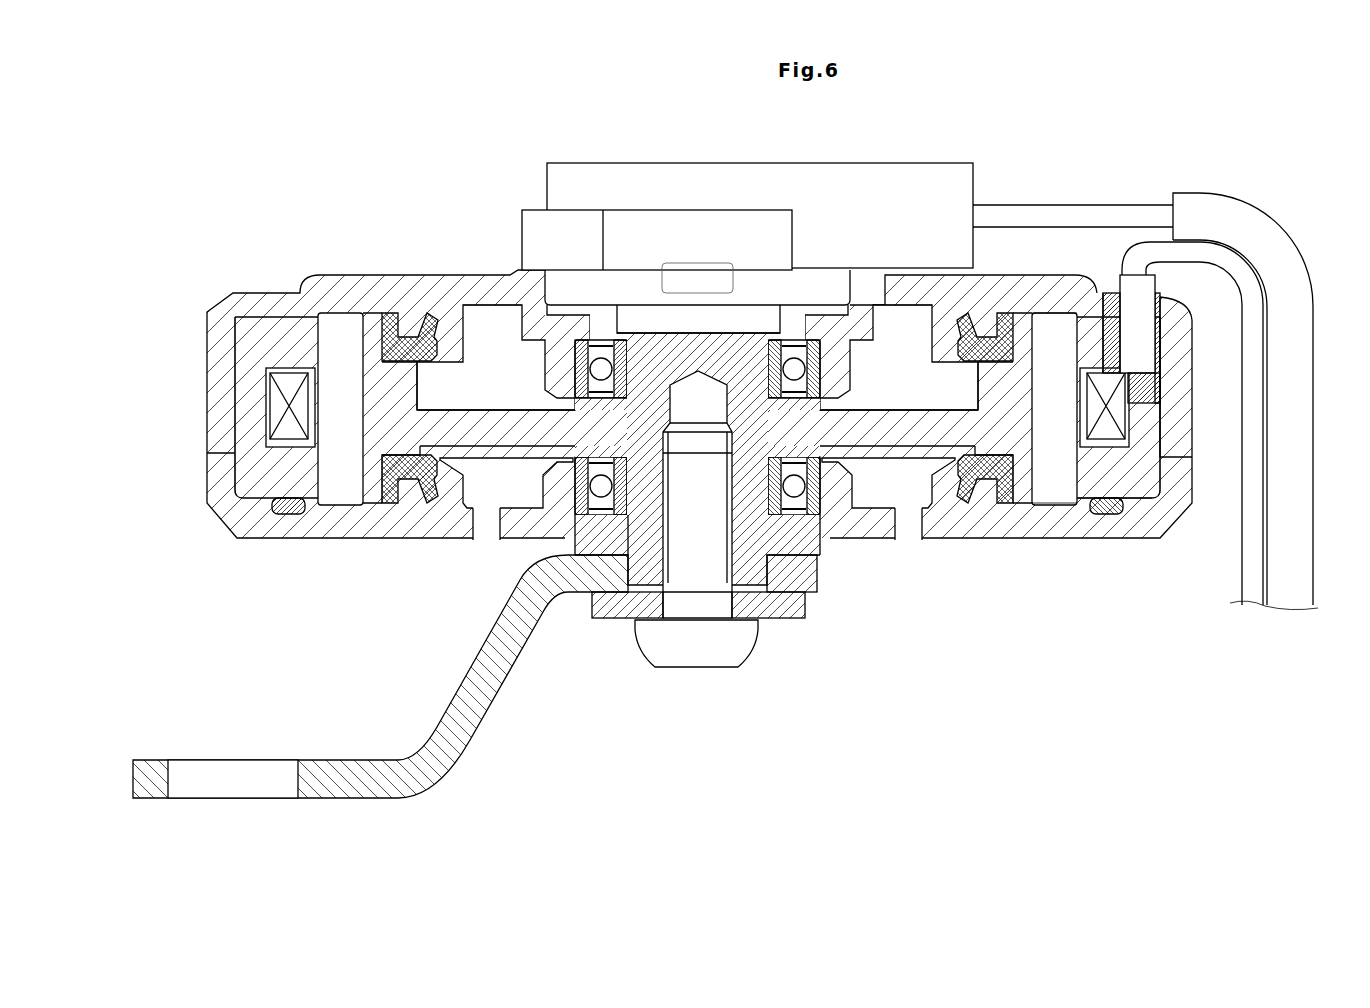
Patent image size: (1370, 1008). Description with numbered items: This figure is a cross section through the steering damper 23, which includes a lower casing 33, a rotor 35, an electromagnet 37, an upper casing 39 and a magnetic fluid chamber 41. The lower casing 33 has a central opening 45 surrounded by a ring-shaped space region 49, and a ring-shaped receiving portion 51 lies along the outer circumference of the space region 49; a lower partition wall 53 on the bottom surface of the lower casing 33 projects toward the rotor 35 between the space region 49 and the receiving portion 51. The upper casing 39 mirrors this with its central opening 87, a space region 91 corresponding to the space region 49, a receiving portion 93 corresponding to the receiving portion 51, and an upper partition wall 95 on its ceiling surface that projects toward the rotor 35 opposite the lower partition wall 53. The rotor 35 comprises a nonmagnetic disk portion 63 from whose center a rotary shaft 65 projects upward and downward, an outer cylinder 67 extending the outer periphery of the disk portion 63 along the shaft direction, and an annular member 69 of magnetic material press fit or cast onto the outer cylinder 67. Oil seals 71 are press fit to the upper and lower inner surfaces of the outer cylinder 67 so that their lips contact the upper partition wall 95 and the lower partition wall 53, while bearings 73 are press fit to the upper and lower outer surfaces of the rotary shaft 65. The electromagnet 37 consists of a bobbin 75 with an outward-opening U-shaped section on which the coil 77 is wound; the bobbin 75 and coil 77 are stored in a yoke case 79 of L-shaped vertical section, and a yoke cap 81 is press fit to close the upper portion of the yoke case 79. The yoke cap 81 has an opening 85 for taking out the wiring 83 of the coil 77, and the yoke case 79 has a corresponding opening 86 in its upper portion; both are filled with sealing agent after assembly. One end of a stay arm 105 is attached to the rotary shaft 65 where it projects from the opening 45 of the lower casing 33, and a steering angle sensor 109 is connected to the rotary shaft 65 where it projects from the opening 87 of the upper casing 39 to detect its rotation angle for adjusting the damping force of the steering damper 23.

The steering damper 23 is at (1117, 160).
The lower casing 33 is at (1157, 550).
The rotor 35 is at (848, 400).
The electromagnet 37 is at (249, 426).
The upper casing 39 is at (1036, 305).
The magnetic fluid chamber 41 is at (423, 509).
The opening 45 is at (752, 535).
The space region 49 is at (889, 489).
The receiving portion 51 is at (1050, 520).
The lower partition wall 53 is at (488, 510).
The disk portion 63 is at (521, 410).
The rotary shaft 65 is at (742, 372).
The outer cylinder 67 is at (368, 497).
The annular member 69 is at (347, 497).
The oil seals 71 is at (438, 364).
The bearings 73 is at (598, 338).
The bobbin 75 is at (1102, 518).
The coil 77 is at (262, 392).
The yoke case 79 is at (1150, 478).
The yoke cap 81 is at (1138, 330).
The wiring 83 is at (1232, 276).
The opening 85 is at (1158, 300).
The opening 86 is at (1165, 362).
The opening 87 is at (793, 305).
The space region 91 is at (911, 395).
The receiving portion 93 is at (1112, 296).
The upper partition wall 95 is at (480, 358).
The stay arm 105 is at (412, 800).
The steering angle sensor 109 is at (659, 160).